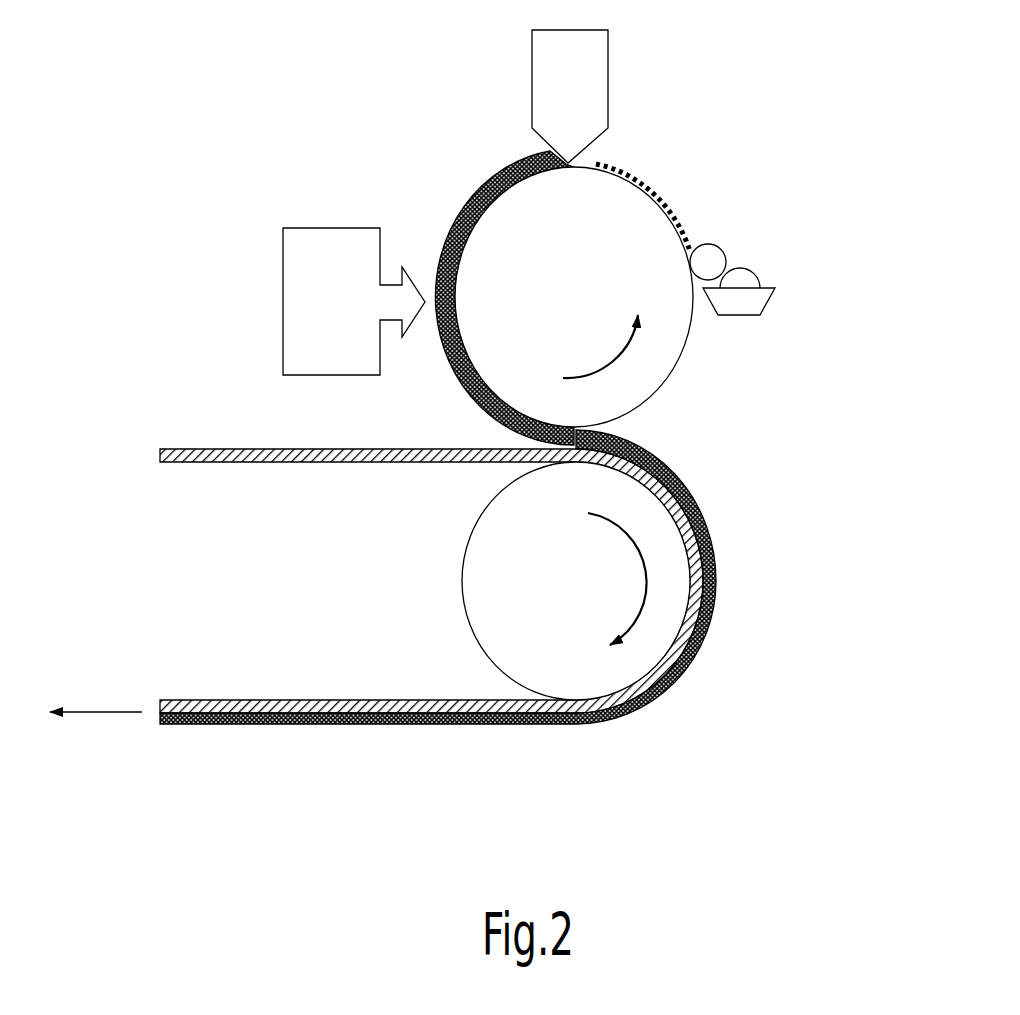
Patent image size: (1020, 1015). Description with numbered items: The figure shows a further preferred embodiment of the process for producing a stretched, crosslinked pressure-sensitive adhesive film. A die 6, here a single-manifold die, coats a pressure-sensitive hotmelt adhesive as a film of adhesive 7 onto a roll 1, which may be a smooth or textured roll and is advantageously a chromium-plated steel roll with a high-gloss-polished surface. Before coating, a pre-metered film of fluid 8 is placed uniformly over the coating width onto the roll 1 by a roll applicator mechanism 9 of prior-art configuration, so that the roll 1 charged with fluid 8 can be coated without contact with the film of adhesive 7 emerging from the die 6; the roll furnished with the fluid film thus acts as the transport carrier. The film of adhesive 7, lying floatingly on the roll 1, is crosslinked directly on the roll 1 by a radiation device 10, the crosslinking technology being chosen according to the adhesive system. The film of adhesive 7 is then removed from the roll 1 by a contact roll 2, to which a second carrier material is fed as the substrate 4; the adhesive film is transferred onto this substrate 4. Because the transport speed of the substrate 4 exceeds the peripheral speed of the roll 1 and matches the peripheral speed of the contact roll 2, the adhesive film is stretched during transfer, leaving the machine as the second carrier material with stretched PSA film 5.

The roll 1 is at (585, 263).
The contact roll 2 is at (592, 565).
The substrate 4 is at (277, 448).
The second carrier material with stretched PSA film 5 is at (385, 722).
The die 6 is at (583, 89).
The film of adhesive 7 is at (467, 203).
The film of fluid 8 is at (637, 187).
The roll applicator mechanism 9 is at (733, 283).
The radiation device 10 is at (348, 317).